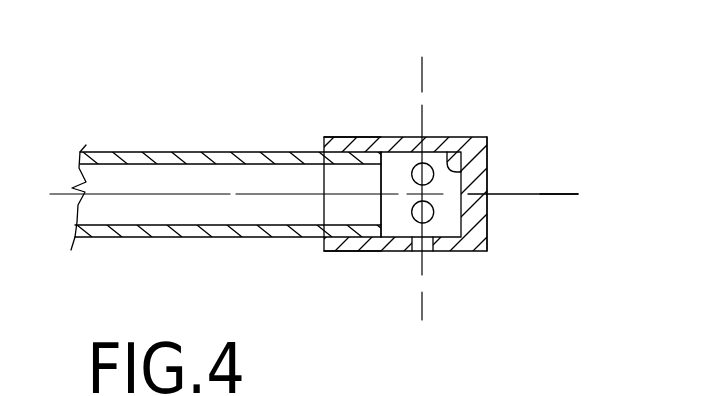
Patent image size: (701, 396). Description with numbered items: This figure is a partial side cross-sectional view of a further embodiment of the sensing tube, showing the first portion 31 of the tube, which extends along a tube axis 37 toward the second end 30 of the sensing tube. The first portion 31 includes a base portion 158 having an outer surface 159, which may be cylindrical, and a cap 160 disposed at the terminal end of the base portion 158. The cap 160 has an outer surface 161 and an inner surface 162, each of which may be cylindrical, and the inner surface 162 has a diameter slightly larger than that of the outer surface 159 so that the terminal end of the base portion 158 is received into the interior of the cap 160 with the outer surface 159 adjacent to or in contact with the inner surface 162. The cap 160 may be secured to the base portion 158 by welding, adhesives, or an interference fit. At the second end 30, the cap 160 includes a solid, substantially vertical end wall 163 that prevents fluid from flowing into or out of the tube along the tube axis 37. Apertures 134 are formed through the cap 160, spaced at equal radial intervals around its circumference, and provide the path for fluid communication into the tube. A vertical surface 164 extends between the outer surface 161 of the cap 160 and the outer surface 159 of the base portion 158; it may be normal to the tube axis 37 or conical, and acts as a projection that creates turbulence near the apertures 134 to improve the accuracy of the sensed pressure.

The second end 30 is at (477, 280).
The first portion 31 is at (116, 116).
The tube axis 37 is at (550, 196).
The apertures 134 is at (427, 137).
The base portion 158 is at (183, 152).
The outer surface 159 is at (240, 153).
The cap 160 is at (465, 118).
The outer surface 161 is at (337, 137).
The inner surface 162 is at (487, 160).
The end wall 163 is at (490, 187).
The vertical surface 164 is at (322, 243).